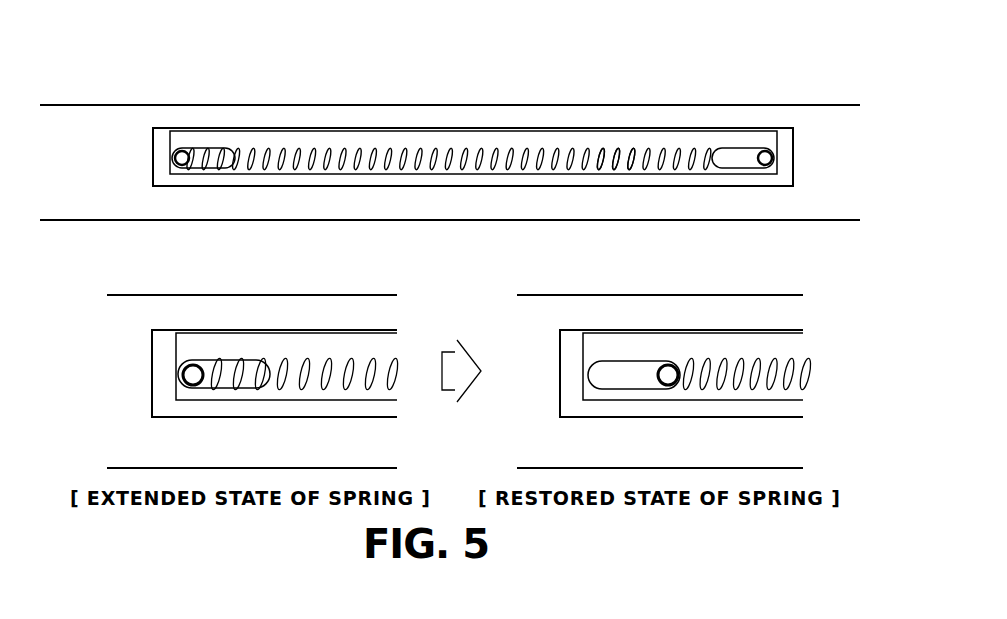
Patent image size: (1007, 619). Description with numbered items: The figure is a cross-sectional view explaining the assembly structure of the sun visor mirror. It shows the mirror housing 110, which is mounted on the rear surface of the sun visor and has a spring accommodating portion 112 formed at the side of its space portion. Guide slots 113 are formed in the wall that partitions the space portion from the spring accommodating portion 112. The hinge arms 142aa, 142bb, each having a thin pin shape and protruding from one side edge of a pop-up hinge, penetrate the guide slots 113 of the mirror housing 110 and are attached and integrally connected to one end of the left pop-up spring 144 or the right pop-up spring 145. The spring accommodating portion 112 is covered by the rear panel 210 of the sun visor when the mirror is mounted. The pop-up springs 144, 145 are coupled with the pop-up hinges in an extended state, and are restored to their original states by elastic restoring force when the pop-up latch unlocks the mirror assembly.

The mirror housing 110 is at (435, 180).
The spring accommodating portion 112 is at (449, 108).
The guide slot 113 is at (214, 150).
The hinge arm 142aa is at (181, 150).
The hinge arm 142bb is at (763, 150).
The left pop-up spring 144 is at (612, 148).
The right pop-up spring 145 is at (616, 159).
The rear panel 210 is at (555, 113).